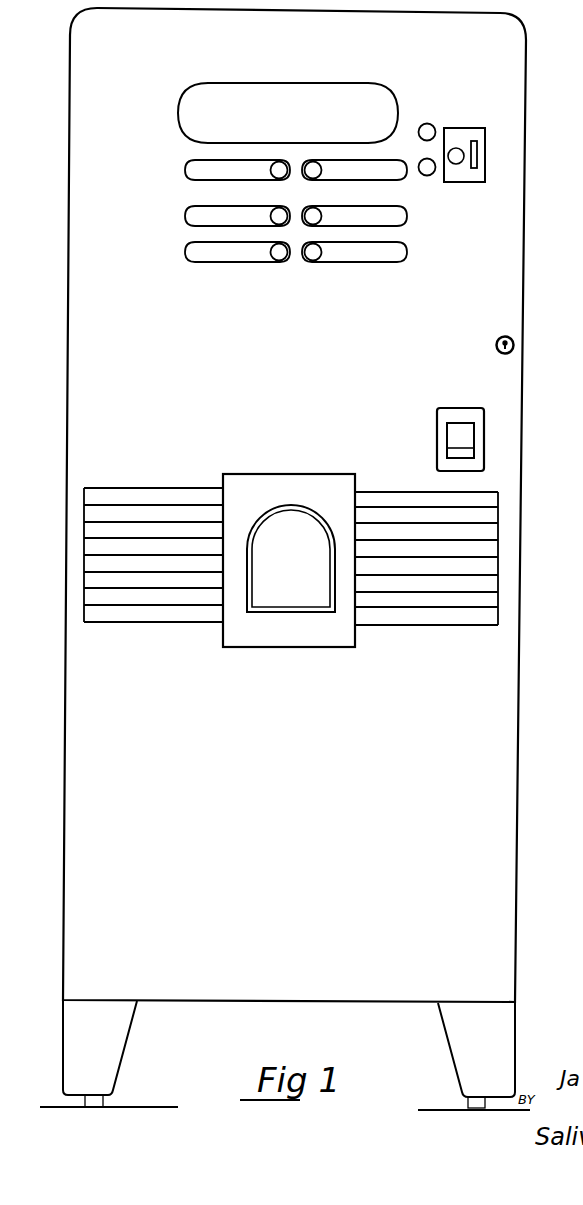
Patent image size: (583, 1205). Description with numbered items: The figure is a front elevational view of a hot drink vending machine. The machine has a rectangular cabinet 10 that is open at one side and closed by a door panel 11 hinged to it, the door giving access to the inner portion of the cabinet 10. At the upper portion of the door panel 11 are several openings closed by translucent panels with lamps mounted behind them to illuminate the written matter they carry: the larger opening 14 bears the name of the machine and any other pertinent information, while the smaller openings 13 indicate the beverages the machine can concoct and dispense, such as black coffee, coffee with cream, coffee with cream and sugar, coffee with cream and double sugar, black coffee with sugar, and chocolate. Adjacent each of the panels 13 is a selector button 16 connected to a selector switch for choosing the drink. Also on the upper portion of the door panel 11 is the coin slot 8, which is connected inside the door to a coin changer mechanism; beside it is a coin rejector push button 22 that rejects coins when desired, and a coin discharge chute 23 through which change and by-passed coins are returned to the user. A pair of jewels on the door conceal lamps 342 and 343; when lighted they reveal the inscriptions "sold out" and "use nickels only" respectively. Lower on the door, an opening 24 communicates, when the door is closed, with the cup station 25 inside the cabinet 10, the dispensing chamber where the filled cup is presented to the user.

The cabinet 10 is at (540, 222).
The door panel 11 is at (376, 882).
The opening 14 is at (386, 86).
The openings 13 is at (184, 174).
The selector button 16 is at (308, 177).
The lamp 342 is at (431, 122).
The lamp 343 is at (426, 177).
The coin rejector push button 22 is at (456, 164).
The coin slot 8 is at (476, 153).
The coin discharge chute 23 is at (457, 437).
The opening 24 is at (289, 560).
The cup station 25 is at (300, 588).